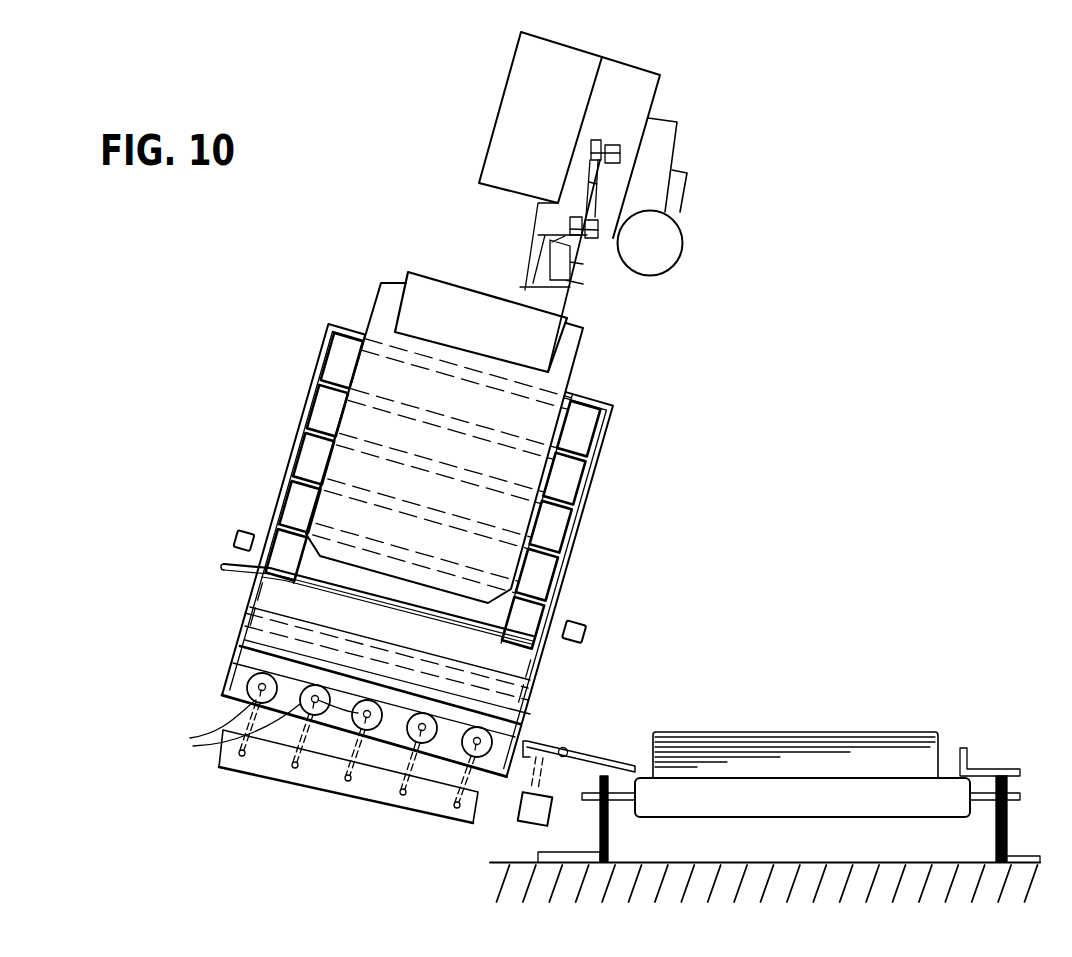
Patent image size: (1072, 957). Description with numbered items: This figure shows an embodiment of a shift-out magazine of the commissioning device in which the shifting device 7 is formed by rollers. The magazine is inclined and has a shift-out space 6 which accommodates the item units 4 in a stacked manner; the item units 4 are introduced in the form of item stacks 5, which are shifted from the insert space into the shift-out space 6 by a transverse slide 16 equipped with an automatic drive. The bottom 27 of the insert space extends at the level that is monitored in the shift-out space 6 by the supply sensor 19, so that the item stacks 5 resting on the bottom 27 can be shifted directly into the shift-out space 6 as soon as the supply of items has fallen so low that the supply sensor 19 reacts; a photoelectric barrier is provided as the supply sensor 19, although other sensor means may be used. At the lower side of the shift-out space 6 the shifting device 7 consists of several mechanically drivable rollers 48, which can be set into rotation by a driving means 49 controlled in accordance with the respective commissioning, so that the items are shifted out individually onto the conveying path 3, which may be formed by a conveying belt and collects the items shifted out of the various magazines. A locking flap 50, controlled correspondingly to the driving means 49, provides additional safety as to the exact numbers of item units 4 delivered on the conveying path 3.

The conveying path 3 is at (888, 807).
The item units 4 is at (817, 750).
The item stacks 5 is at (555, 527).
The shift-out space 6 is at (592, 407).
The shifting device 7 is at (240, 688).
The transverse slide 16 is at (570, 351).
The supply sensor 19 is at (245, 534).
The bottom 27 is at (223, 573).
The rollers 48 is at (246, 730).
The driving means 49 is at (333, 783).
The locking flap 50 is at (541, 746).